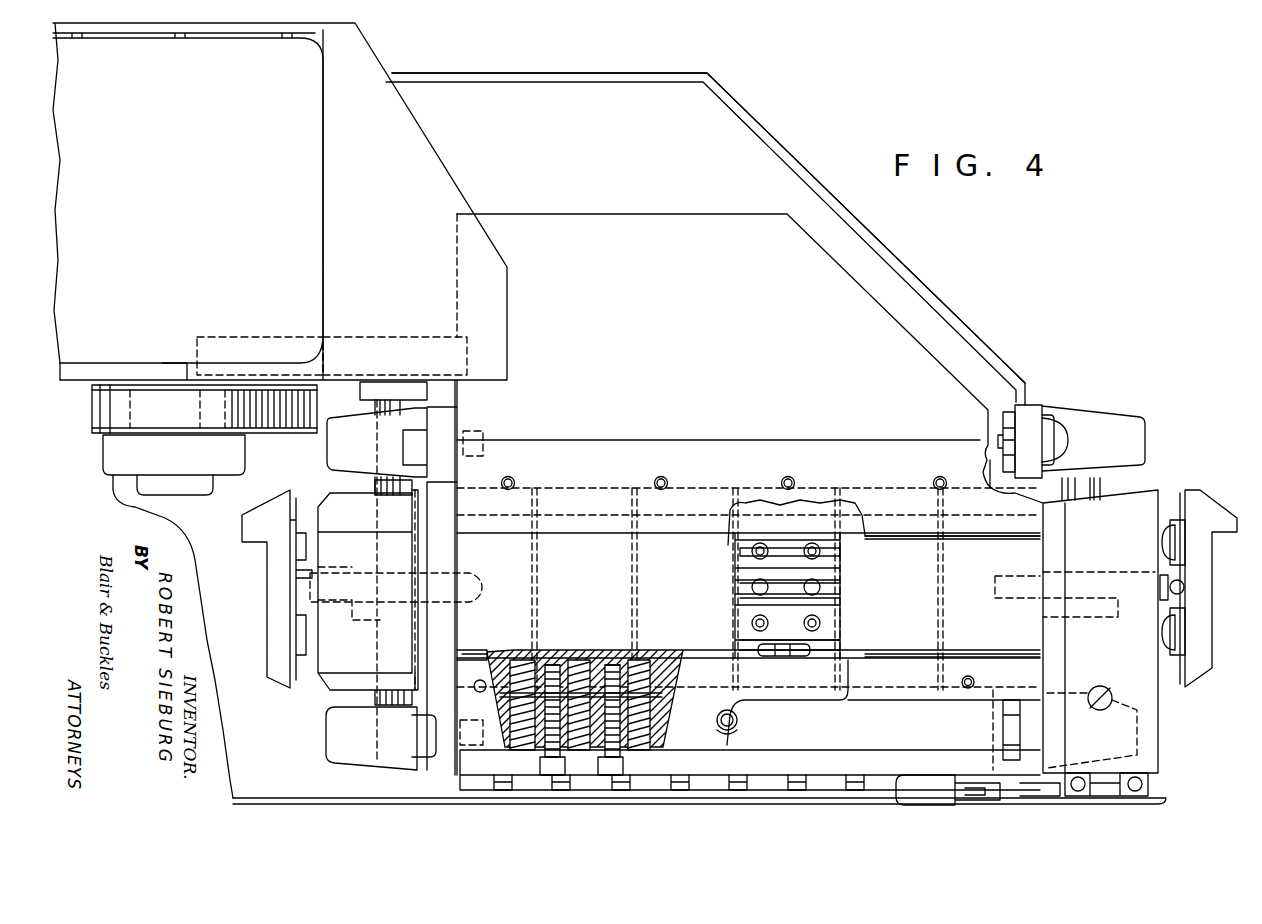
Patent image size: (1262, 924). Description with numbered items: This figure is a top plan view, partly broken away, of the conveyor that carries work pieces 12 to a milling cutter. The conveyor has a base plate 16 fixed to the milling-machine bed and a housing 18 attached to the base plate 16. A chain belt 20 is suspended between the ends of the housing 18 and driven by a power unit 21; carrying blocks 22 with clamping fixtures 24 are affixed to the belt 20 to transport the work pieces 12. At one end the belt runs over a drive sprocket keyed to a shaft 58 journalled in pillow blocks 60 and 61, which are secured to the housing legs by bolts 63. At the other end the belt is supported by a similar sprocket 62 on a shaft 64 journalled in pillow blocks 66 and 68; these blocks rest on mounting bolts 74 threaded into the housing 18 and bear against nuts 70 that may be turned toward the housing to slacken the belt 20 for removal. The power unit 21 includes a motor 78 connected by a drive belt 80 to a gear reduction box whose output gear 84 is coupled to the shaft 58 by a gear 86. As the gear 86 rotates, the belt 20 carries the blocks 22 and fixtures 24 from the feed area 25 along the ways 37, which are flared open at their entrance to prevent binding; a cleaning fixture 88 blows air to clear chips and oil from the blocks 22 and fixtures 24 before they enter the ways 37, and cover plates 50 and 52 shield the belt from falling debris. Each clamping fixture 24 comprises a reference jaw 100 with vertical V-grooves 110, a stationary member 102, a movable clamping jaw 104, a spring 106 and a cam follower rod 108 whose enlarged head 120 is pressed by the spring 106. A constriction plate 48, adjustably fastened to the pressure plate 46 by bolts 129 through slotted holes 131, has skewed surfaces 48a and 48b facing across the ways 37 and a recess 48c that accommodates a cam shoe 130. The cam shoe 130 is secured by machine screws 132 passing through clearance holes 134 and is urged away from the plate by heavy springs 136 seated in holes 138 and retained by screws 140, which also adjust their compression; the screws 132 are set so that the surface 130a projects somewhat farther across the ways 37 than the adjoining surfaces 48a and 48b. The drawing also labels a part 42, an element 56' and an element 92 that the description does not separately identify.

The work pieces 12 is at (822, 581).
The base plate 16 is at (930, 311).
The housing 18 is at (1010, 484).
The chain belt 20 is at (420, 576).
The power unit 21 is at (378, 276).
The carrying blocks 22 is at (277, 638).
The clamping fixtures 24 is at (740, 587).
The feed area 25 is at (1022, 546).
The ways 37 is at (1058, 531).
The cover plate 42 is at (802, 530).
The pressure plate 46 is at (877, 772).
The constriction plate 48 is at (712, 730).
The skewed surface 48a is at (730, 655).
The skewed surface 48b is at (492, 652).
The recess 48c is at (662, 696).
The cover plate 50 is at (917, 725).
The cover plate 52 is at (874, 470).
The pin 56' is at (352, 587).
The shaft 58 is at (375, 694).
The pillow block 60 is at (367, 735).
The pillow block 61 is at (364, 444).
The sprocket 62 is at (1016, 576).
The bolts 63 is at (415, 432).
The shaft 64 is at (1103, 488).
The pillow block 66 is at (1113, 706).
The pillow block 68 is at (1140, 430).
The nuts 70 is at (1005, 408).
The mounting bolts 74 is at (1070, 438).
The motor 78 is at (204, 286).
The drive belt 80 is at (92, 412).
The gear 84 is at (273, 347).
The gear 86 is at (431, 346).
The cleaning fixture 88 is at (1167, 490).
The screws 92 is at (493, 788).
The reference jaw 100 is at (838, 561).
The stationary member 102 is at (843, 621).
The movable clamping jaw 104 is at (838, 599).
The spring 106 is at (847, 641).
The cam follower rod 108 is at (847, 651).
The vertical V-grooves 110 is at (740, 560).
The enlarged head 120 is at (766, 657).
The bolts 129 is at (740, 719).
The cam shoe 130 is at (650, 660).
The surface 130a is at (614, 662).
The slotted holes 131 is at (738, 736).
The machine screws 132 is at (612, 778).
The clearance holes 134 is at (540, 758).
The heavy springs 136 is at (540, 668).
The holes 138 is at (588, 660).
The screws 140 is at (660, 743).